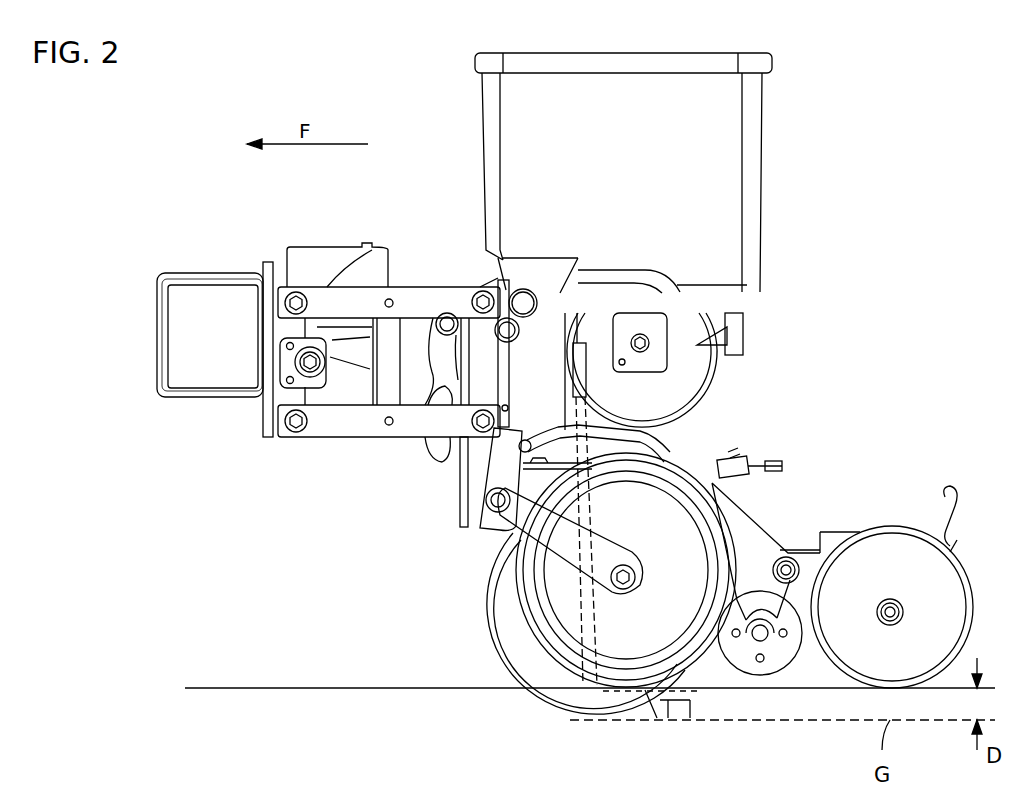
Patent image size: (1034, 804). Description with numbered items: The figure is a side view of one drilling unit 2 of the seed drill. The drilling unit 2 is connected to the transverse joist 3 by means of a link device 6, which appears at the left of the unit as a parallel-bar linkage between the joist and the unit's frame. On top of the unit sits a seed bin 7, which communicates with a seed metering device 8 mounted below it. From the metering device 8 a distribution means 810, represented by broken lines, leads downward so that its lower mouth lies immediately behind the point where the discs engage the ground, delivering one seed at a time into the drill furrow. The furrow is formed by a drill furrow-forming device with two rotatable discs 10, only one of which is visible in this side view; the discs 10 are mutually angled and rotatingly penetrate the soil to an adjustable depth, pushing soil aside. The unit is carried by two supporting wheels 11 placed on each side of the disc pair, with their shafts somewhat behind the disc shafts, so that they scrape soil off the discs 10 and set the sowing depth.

The drilling unit 2 is at (878, 212).
The transverse joist 3 is at (222, 377).
The link device 6 is at (346, 472).
The seed bin 7 is at (735, 141).
The seed metering device 8 is at (693, 375).
The rotatable discs 10 is at (517, 650).
The supporting wheels 11 is at (533, 612).
The distribution means 810 is at (527, 556).